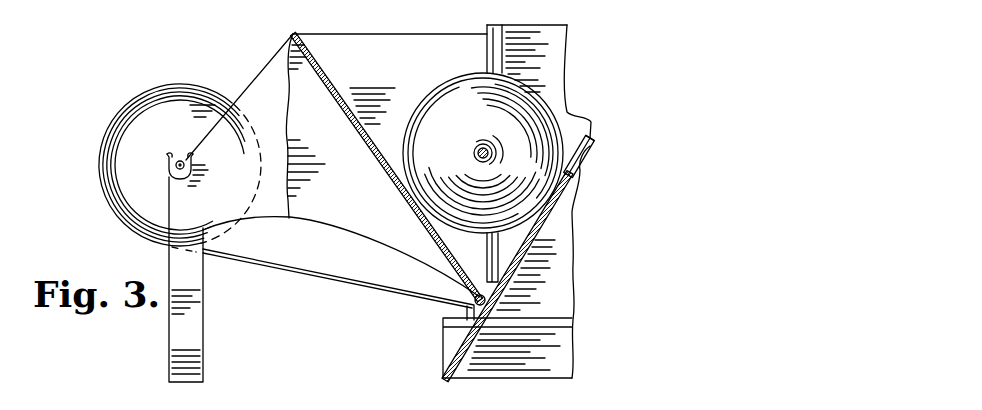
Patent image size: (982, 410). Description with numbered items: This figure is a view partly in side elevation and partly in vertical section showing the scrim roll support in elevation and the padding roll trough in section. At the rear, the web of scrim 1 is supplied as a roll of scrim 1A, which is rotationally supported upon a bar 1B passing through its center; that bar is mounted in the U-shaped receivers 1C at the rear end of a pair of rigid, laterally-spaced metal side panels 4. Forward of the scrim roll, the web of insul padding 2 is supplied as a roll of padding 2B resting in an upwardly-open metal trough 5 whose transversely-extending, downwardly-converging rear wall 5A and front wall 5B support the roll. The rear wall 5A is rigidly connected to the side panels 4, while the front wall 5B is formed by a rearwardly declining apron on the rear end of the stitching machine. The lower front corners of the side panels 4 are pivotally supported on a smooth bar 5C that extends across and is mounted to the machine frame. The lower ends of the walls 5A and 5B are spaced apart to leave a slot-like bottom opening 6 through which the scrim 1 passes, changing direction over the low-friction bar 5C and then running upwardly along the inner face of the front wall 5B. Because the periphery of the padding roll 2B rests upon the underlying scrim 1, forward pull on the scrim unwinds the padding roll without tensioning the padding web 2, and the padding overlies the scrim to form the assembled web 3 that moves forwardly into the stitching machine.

The web of scrim 1 is at (288, 282).
The roll of scrim 1A is at (158, 129).
The bar 1B is at (185, 157).
The U-shaped receivers 1C is at (170, 172).
The web of insul padding 2 is at (558, 181).
The roll of padding 2B is at (470, 116).
The assembled web 3 is at (585, 133).
The side panels 4 is at (290, 112).
The trough 5 is at (385, 56).
The rear wall 5A is at (330, 82).
The front wall 5B is at (565, 218).
The bar 5C is at (474, 297).
The bottom opening 6 is at (468, 330).